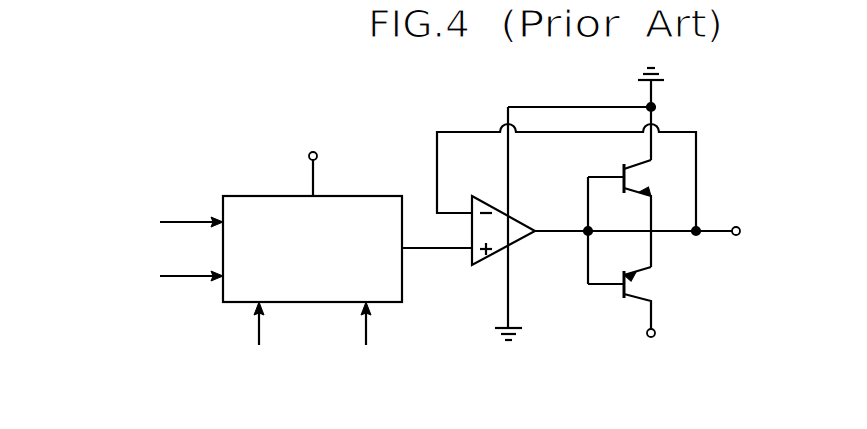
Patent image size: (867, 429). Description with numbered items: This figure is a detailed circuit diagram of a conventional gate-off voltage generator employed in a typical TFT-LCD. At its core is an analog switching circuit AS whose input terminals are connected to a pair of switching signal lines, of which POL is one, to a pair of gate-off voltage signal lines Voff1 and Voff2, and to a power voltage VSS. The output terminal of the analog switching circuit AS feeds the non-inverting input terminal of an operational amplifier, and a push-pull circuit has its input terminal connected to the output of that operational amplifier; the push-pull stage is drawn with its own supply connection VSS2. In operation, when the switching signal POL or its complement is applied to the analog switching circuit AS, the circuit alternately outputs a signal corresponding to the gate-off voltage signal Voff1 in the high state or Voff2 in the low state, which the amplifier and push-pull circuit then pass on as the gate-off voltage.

The analog switching circuit AS is at (312, 249).
The power voltage VSS is at (312, 157).
The switching signal line POL is at (161, 223).
The gate-off voltage signal line Voff1 is at (259, 341).
The gate-off voltage signal line Voff2 is at (367, 341).
The VSS supply terminal (emitter) VSS2 is at (650, 332).